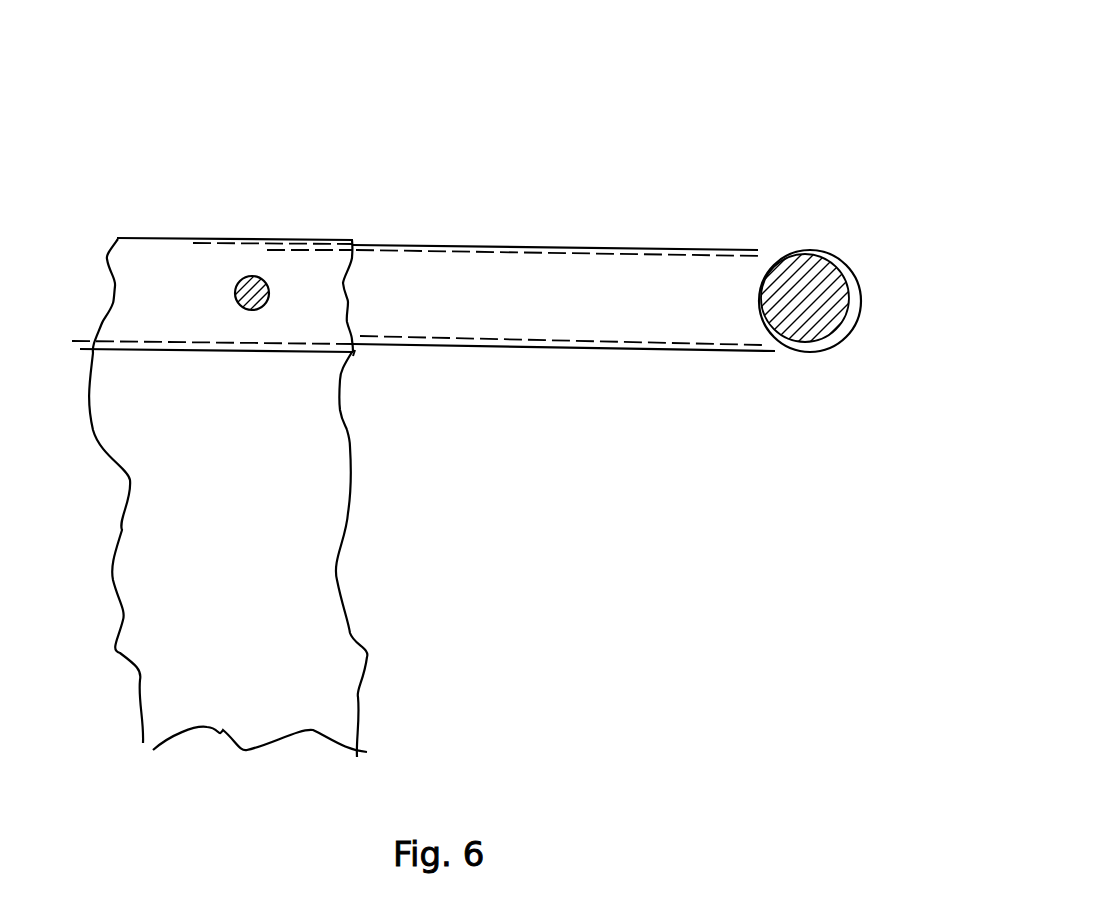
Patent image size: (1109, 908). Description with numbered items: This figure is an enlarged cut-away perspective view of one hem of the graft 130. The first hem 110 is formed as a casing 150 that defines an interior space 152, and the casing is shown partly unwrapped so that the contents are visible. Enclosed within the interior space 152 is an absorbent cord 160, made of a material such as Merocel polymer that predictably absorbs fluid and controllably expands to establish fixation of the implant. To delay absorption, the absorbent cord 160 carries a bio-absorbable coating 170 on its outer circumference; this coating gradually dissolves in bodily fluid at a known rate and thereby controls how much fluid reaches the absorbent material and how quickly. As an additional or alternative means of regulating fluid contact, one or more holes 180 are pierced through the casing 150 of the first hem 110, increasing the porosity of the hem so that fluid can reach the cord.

The first hem 110 is at (660, 49).
The graft 130 is at (330, 515).
The casing 150 is at (290, 233).
The interior space 152 is at (352, 352).
The absorbent cord 160 is at (823, 273).
The bio-absorbable coating 170 is at (572, 245).
The holes 180 is at (243, 311).